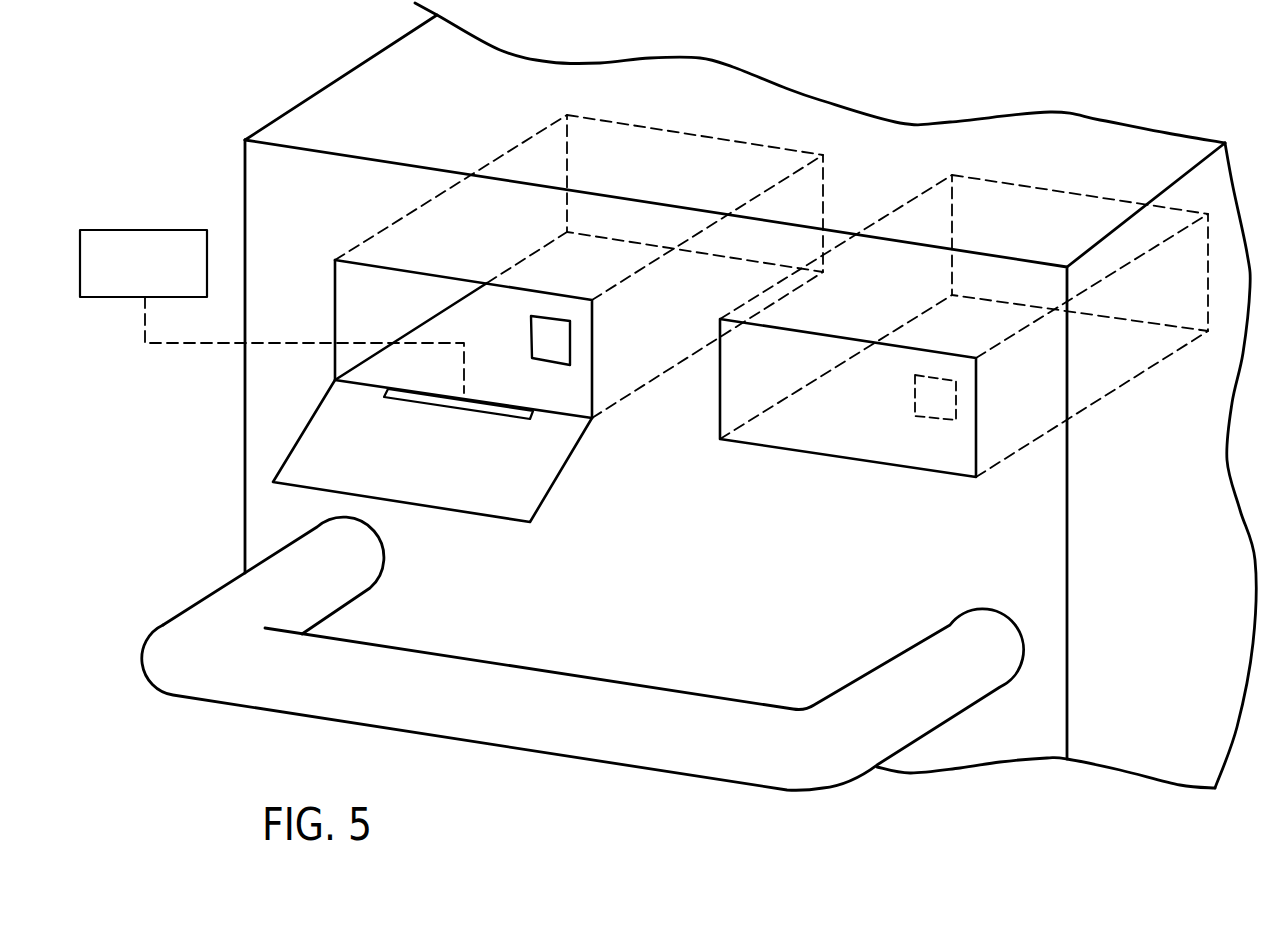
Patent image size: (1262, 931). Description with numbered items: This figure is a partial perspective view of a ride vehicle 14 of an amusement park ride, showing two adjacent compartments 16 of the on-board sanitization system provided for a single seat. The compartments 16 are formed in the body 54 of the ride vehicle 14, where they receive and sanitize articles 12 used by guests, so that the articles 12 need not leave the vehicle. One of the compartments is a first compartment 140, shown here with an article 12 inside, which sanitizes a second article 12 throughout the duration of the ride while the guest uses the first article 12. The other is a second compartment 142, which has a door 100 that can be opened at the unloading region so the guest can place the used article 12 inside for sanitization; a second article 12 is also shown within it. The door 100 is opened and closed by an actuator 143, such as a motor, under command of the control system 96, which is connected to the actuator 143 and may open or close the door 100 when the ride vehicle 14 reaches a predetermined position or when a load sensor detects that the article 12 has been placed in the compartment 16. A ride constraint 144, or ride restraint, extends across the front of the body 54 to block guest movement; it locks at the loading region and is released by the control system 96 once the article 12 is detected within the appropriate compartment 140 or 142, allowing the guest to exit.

The ride vehicle 14 is at (347, 115).
The body 54 is at (432, 108).
The control system 96 is at (145, 230).
The compartment 16 is at (632, 122).
The second compartment 142 is at (743, 140).
The first compartment 140 is at (1090, 193).
The article 12 is at (530, 337).
The actuator 143 is at (485, 406).
The door 100 is at (528, 492).
The ride constraint 144 is at (347, 577).